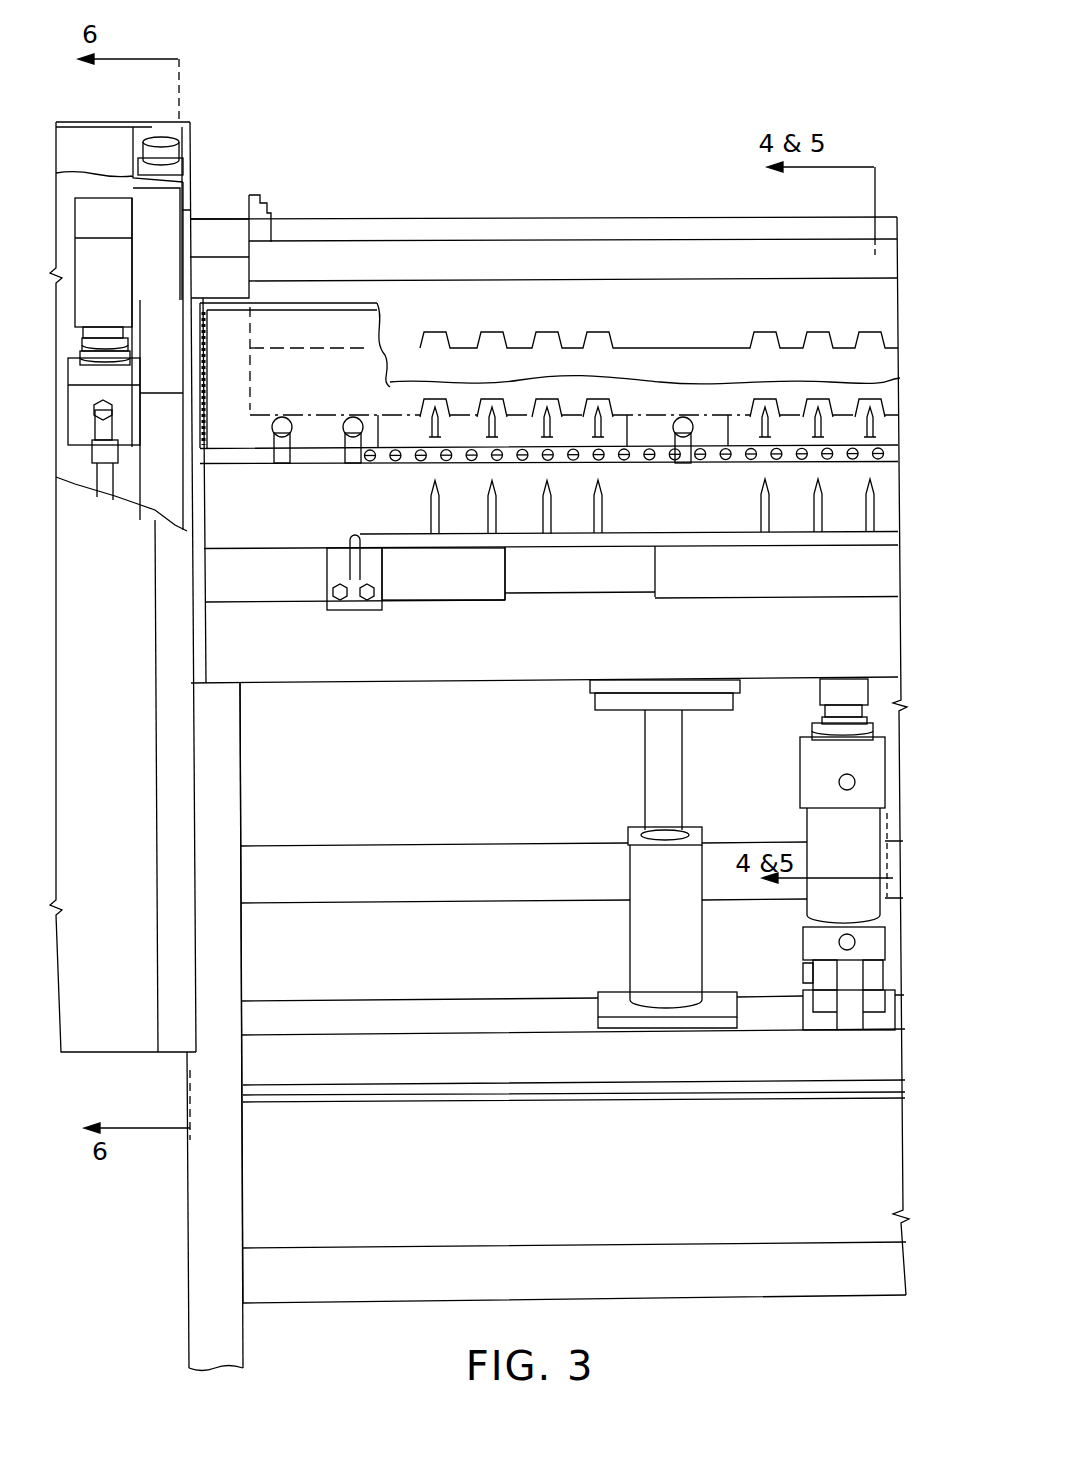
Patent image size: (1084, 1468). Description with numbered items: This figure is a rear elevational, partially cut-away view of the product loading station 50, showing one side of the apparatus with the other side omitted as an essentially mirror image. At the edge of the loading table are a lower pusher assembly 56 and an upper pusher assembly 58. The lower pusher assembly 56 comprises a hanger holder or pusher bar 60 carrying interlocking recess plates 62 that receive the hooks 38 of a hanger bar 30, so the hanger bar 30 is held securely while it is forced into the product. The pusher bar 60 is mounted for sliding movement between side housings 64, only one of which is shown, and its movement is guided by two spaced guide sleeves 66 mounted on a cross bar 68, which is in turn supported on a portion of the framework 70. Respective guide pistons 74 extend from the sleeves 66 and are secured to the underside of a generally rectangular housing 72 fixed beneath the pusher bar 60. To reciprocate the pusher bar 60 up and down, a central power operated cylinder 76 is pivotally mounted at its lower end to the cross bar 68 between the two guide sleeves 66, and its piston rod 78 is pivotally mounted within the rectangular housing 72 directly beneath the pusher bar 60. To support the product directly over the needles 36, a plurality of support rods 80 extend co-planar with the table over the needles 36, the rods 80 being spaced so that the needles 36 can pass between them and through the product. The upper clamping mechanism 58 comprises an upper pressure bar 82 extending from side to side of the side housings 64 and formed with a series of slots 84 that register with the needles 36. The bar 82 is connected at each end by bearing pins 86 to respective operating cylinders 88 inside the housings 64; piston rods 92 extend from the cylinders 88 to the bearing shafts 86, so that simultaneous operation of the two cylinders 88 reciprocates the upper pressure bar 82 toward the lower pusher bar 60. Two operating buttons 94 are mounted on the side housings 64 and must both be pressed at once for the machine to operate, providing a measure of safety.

The hanger bar 30 is at (710, 514).
The needles 36 is at (497, 503).
The hooks 38 is at (343, 553).
The product loading station 50 is at (718, 1318).
The lower pusher assembly 56 is at (525, 692).
The upper pusher assembly 58 is at (675, 188).
The pusher bar 60 is at (613, 573).
The interlocking recess plates 62 is at (375, 570).
The side housing 64 is at (97, 796).
The guide sleeve 66 is at (653, 928).
The cross bar 68 is at (503, 1063).
The framework 70 is at (232, 1184).
The rectangular housing 72 is at (395, 657).
The piston rod 74 is at (662, 758).
The power operated cylinder 76 is at (858, 837).
The piston rod 78 is at (872, 703).
The support rods 80 is at (418, 464).
The upper pressure bar 82 is at (661, 322).
The slots 84 is at (490, 332).
The bearing pins 86 is at (215, 227).
The operating cylinders 88 is at (126, 476).
The piston rods 92 is at (113, 333).
The operating buttons 94 is at (167, 138).